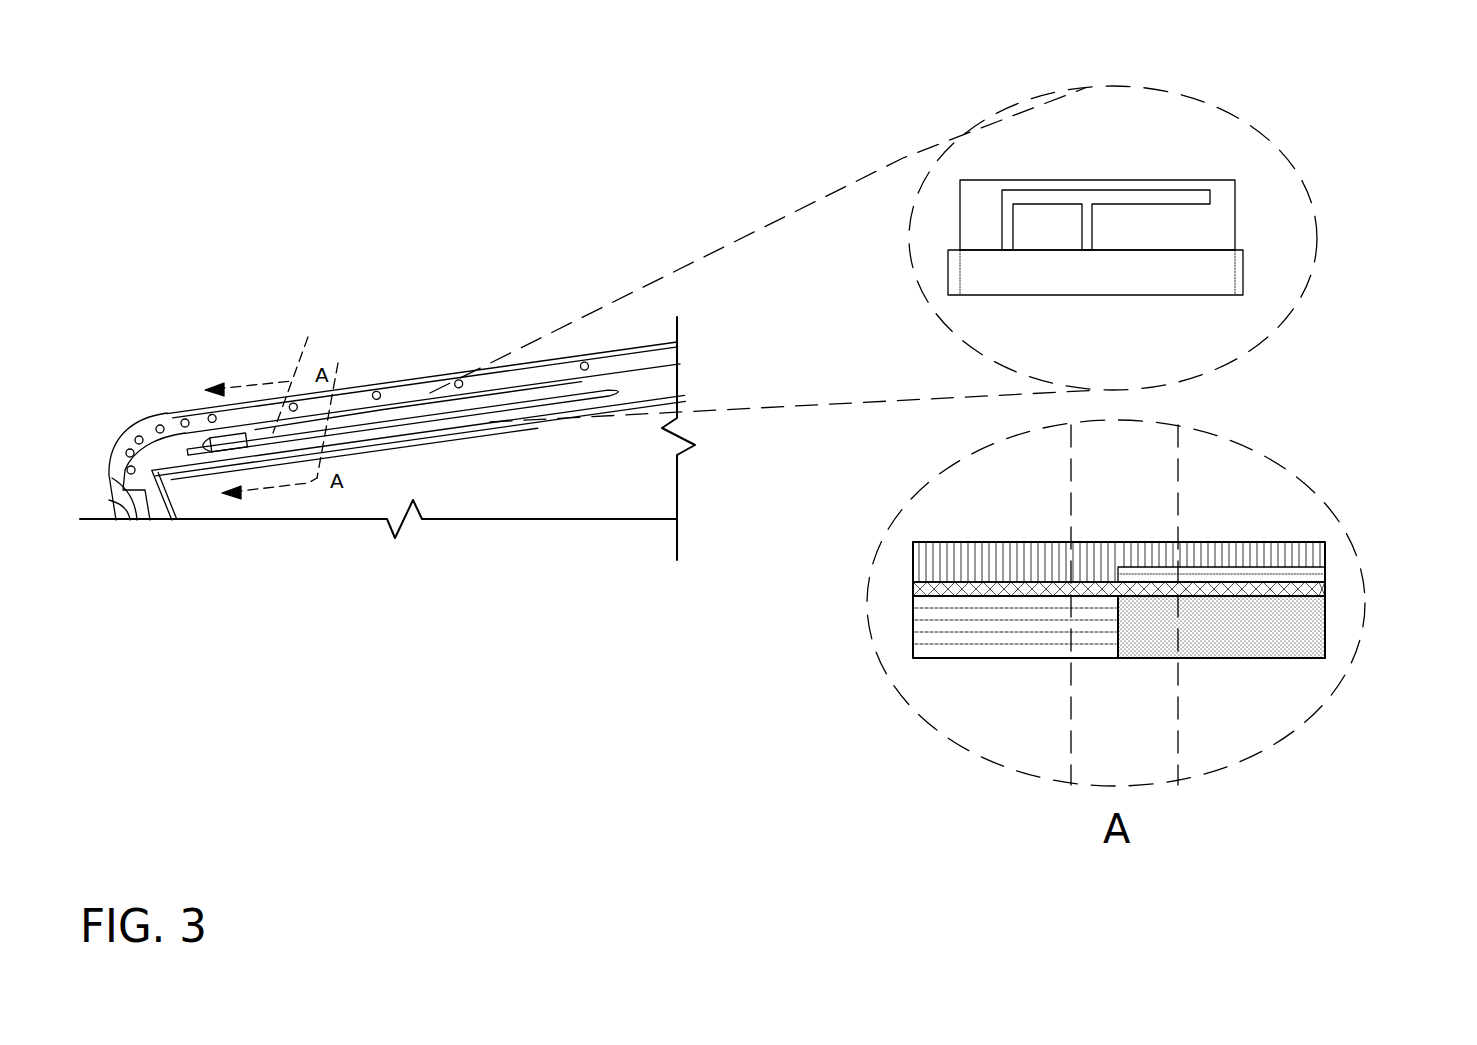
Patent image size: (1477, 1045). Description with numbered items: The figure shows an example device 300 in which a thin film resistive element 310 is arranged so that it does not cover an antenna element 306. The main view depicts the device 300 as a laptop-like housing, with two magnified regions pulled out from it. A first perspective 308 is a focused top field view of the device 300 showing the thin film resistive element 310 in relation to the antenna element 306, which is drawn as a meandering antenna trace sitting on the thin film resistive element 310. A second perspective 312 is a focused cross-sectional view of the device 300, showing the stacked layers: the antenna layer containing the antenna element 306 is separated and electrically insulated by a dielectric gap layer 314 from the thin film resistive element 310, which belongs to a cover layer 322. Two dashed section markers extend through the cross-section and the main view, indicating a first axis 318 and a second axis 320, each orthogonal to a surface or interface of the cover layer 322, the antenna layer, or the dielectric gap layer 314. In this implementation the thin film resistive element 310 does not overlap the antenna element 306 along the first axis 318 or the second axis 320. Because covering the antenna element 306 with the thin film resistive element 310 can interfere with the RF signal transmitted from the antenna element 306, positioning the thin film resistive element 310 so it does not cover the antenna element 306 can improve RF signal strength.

The device 300 is at (238, 324).
The antenna element 306 is at (1037, 190).
The first perspective 308 is at (1085, 92).
The thin film resistive element 310 is at (993, 275).
The second perspective 312 is at (993, 450).
The dielectric gap layer 314 is at (940, 590).
The first axis 318 is at (321, 336).
The second axis 320 is at (356, 350).
The cover layer 322 is at (1218, 553).